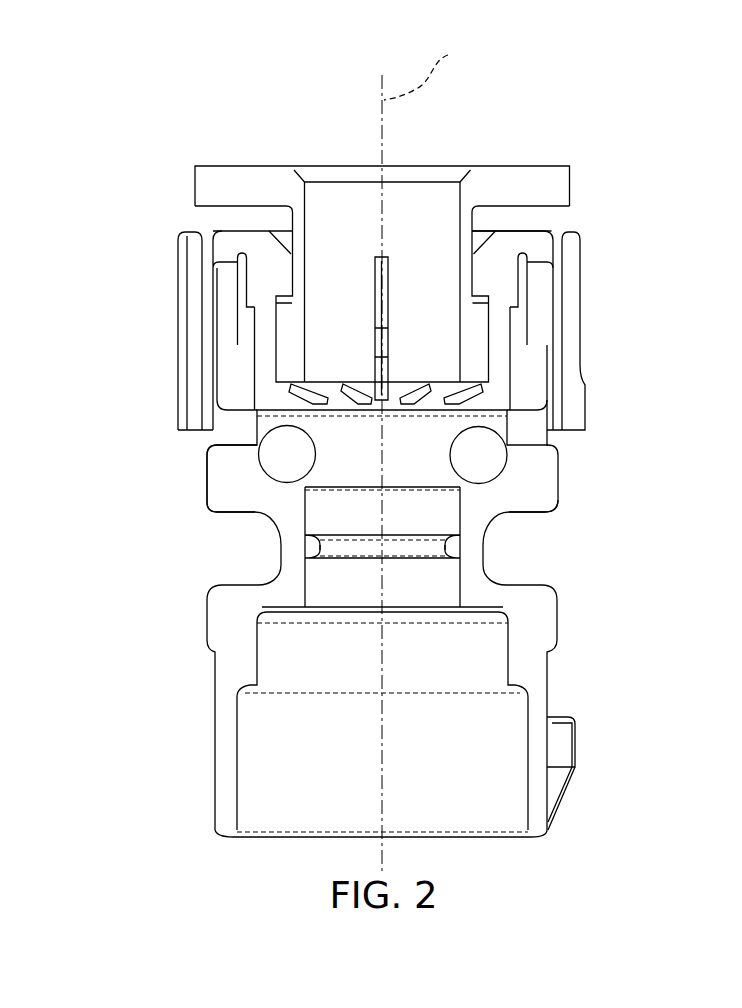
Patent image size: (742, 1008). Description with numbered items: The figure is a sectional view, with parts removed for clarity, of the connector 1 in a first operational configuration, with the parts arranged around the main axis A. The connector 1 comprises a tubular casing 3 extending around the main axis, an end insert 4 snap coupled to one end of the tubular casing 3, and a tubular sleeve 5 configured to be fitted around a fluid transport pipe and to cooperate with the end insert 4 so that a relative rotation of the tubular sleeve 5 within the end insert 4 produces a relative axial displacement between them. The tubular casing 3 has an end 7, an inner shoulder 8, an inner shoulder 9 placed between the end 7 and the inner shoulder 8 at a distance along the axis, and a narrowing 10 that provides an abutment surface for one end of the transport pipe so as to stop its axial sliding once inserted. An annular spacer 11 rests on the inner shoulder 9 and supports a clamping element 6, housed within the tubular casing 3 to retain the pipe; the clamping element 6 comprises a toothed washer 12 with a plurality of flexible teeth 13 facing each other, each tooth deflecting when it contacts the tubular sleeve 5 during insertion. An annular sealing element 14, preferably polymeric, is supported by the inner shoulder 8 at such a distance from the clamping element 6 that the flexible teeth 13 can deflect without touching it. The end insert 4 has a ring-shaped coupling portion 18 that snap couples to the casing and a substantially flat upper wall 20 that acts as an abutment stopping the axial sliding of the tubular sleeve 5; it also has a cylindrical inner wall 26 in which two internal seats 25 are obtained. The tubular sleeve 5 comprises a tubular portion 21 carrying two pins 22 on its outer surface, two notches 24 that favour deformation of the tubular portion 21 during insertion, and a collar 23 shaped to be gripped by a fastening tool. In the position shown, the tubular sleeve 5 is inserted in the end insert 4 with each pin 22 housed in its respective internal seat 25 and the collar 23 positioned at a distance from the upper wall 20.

The connector 1 is at (348, 452).
The tubular casing 3 is at (372, 623).
The end insert 4 is at (367, 304).
The tubular sleeve 5 is at (375, 304).
The clamping element 6 is at (406, 416).
The end 7 is at (200, 275).
The inner shoulder 8 is at (512, 505).
The inner shoulder 9 is at (205, 446).
The narrowing 10 is at (321, 544).
The annular spacer 11 is at (548, 412).
The toothed washer 12 is at (548, 437).
The flexible teeth 13 is at (366, 404).
The annular sealing element 14 is at (277, 480).
The coupling portion 18 is at (581, 362).
The upper wall 20 is at (254, 225).
The tubular portion 21 is at (296, 262).
The pins 22 is at (281, 307).
The collar 23 is at (550, 167).
The notches 24 is at (393, 268).
The internal seats 25 is at (262, 352).
The cylindrical inner wall 26 is at (473, 287).